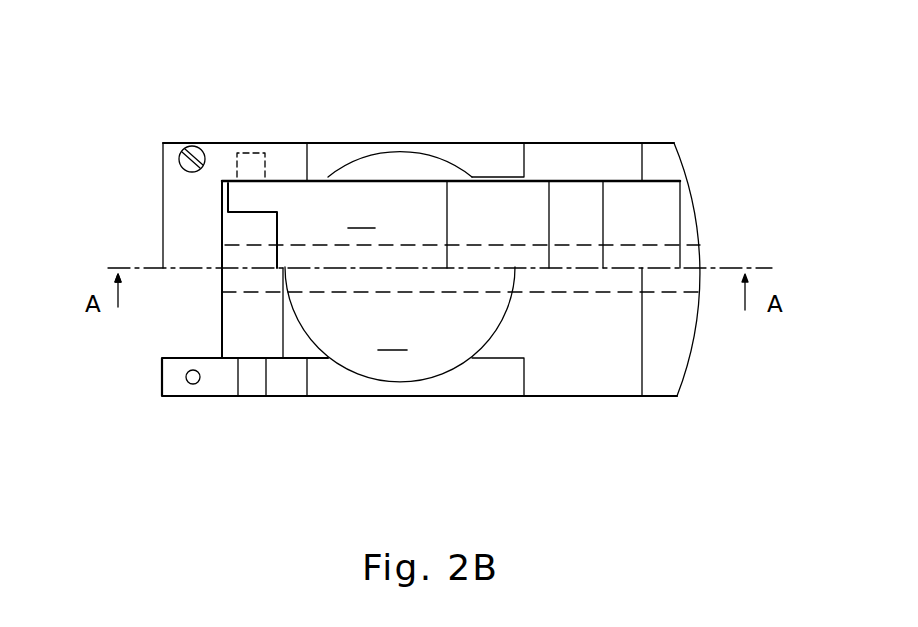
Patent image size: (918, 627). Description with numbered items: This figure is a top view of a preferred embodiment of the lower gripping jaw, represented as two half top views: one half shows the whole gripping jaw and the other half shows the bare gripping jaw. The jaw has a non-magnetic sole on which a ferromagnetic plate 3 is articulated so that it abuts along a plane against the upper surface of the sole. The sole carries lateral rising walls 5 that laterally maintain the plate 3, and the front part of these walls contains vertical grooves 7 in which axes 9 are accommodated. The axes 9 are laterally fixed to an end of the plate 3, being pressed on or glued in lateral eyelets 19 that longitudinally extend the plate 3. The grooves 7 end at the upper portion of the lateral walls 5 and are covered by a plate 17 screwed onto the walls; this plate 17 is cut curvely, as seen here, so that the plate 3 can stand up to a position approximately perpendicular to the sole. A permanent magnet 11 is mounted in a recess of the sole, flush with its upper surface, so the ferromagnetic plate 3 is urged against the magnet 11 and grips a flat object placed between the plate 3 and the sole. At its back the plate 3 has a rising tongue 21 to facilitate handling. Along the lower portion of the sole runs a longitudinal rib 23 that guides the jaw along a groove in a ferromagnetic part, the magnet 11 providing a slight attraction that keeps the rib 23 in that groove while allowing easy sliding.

The plate 3 is at (462, 269).
The lateral rising walls 5 is at (510, 153).
The vertical grooves 7 is at (243, 383).
The axes 9 is at (250, 168).
The permanent magnet 11 is at (400, 267).
The plate 17 is at (183, 222).
The lateral eyelets 19 is at (242, 195).
The rising tongue 21 is at (585, 202).
The longitudinal rib 23 is at (690, 257).